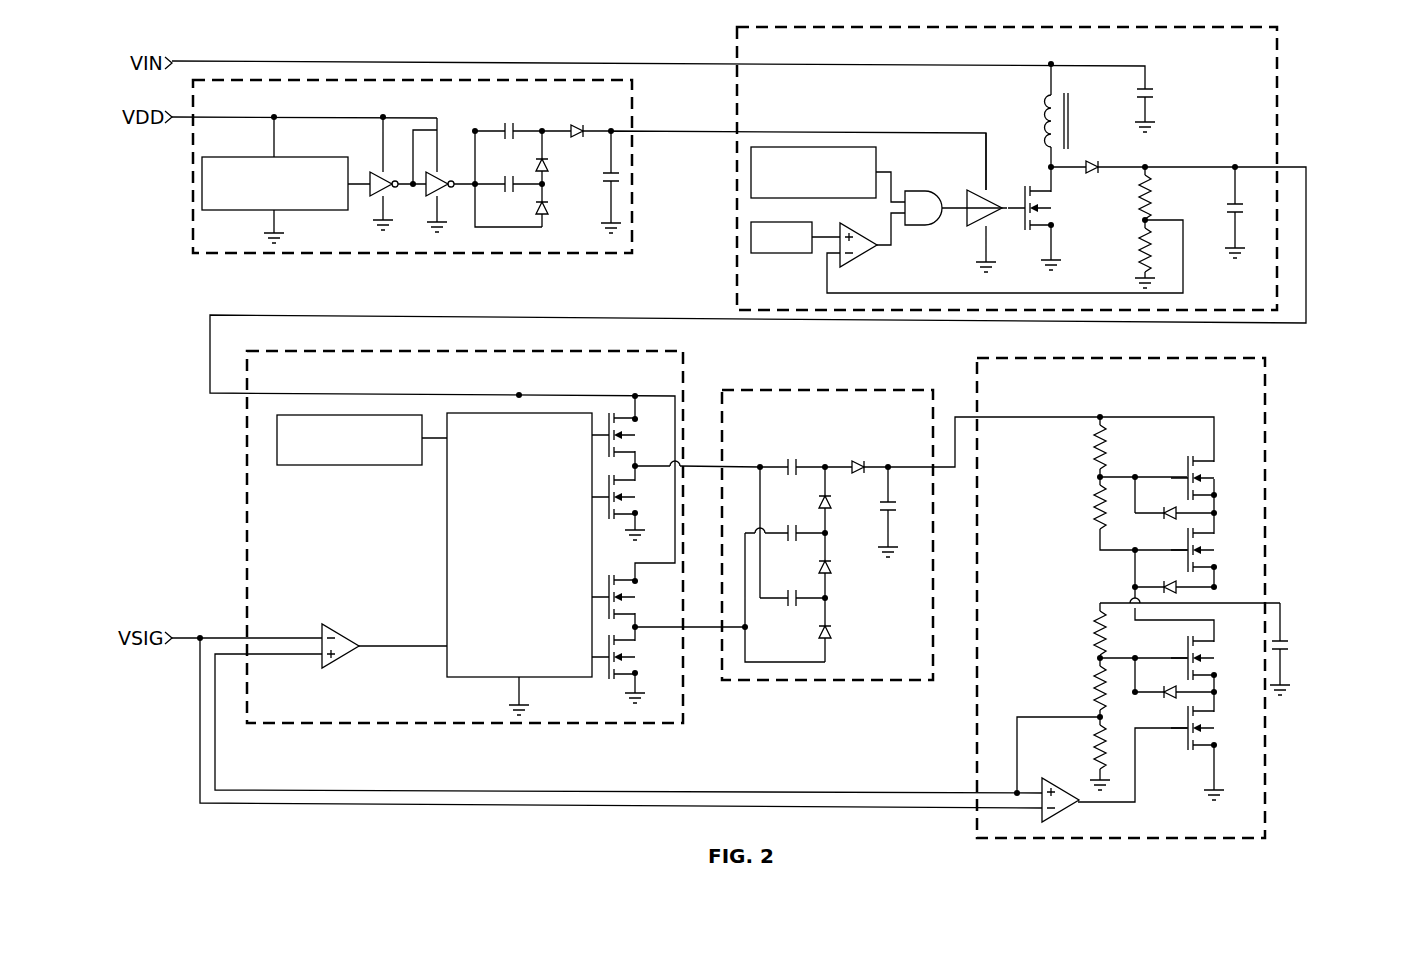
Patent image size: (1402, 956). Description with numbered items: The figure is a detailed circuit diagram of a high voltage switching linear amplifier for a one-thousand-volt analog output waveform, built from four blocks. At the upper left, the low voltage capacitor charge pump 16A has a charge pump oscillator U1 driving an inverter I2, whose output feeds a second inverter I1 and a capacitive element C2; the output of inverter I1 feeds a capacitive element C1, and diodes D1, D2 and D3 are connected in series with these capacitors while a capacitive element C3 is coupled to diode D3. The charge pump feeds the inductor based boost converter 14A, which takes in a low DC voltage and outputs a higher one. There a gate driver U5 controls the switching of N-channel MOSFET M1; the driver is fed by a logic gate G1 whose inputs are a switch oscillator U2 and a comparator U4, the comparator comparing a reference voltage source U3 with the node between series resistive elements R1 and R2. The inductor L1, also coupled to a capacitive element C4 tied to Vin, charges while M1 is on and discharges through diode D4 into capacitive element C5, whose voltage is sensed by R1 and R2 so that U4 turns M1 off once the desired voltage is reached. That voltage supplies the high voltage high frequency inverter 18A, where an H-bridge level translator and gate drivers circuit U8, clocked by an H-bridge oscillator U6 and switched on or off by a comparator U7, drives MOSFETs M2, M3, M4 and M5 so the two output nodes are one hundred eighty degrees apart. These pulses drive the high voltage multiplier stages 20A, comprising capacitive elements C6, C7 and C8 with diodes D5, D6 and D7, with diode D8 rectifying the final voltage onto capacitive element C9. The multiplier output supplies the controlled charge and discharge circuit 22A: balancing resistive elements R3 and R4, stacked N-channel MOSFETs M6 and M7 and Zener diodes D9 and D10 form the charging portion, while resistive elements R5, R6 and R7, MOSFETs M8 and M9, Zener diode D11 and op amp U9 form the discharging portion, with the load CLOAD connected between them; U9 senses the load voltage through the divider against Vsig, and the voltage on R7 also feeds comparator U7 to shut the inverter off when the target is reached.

The inductor based boost converter 14A is at (1278, 67).
The low voltage capacitor charge pump 16A is at (237, 257).
The high voltage high frequency inverter 18A is at (292, 350).
The high voltage multiplier stages 20A is at (755, 390).
The controlled charge and discharge circuit 22A is at (1010, 357).
The charge pump oscillator U1 is at (275, 194).
The inverter I1 is at (435, 172).
The inverter I2 is at (377, 173).
The capacitive element C1 is at (509, 195).
The capacitive element C2 is at (509, 142).
The capacitive element C3 is at (603, 187).
The diode D1 is at (557, 211).
The diode D2 is at (557, 170).
The diode D3 is at (579, 143).
The inductor L1 is at (1035, 121).
The capacitive element C4 is at (1133, 93).
The diode D4 is at (1095, 156).
The N-channel MOSFET M1 is at (1047, 208).
The resistive element R1 is at (1132, 197).
The resistive element R2 is at (1132, 250).
The capacitive element C5 is at (1248, 208).
The switch oscillator U2 is at (813, 183).
The reference voltage source U3 is at (781, 249).
The comparator U4 is at (857, 257).
The logic gate G1 is at (923, 196).
The gate driver U5 is at (981, 195).
The H-bridge oscillator U6 is at (349, 452).
The comparator U7 is at (335, 635).
The H-bridge level translator and gate drivers circuit U8 is at (519, 557).
The MOSFET M2 is at (632, 435).
The MOSFET M3 is at (632, 497).
The MOSFET M4 is at (632, 597).
The MOSFET M5 is at (632, 657).
The capacitive element C6 is at (791, 608).
The capacitive element C7 is at (791, 543).
The capacitive element C8 is at (791, 478).
The capacitive element C9 is at (901, 508).
The diode D5 is at (840, 635).
The diode D6 is at (840, 570).
The diode D7 is at (840, 506).
The diode D8 is at (858, 479).
The resistive element R3 is at (1084, 447).
The resistive element R4 is at (1084, 507).
The resistive element R5 is at (1084, 633).
The resistive element R6 is at (1084, 688).
The resistive element R7 is at (1084, 747).
The N-channel MOSFET M6 is at (1210, 478).
The N-channel MOSFET M7 is at (1210, 550).
The N-channel MOSFET M8 is at (1210, 658).
The N-channel MOSFET M9 is at (1210, 728).
The Zener diode D9 is at (1169, 502).
The Zener diode D10 is at (1169, 576).
The Zener diode D11 is at (1169, 680).
The op amp U9 is at (1054, 789).
The load CLOAD is at (1314, 658).